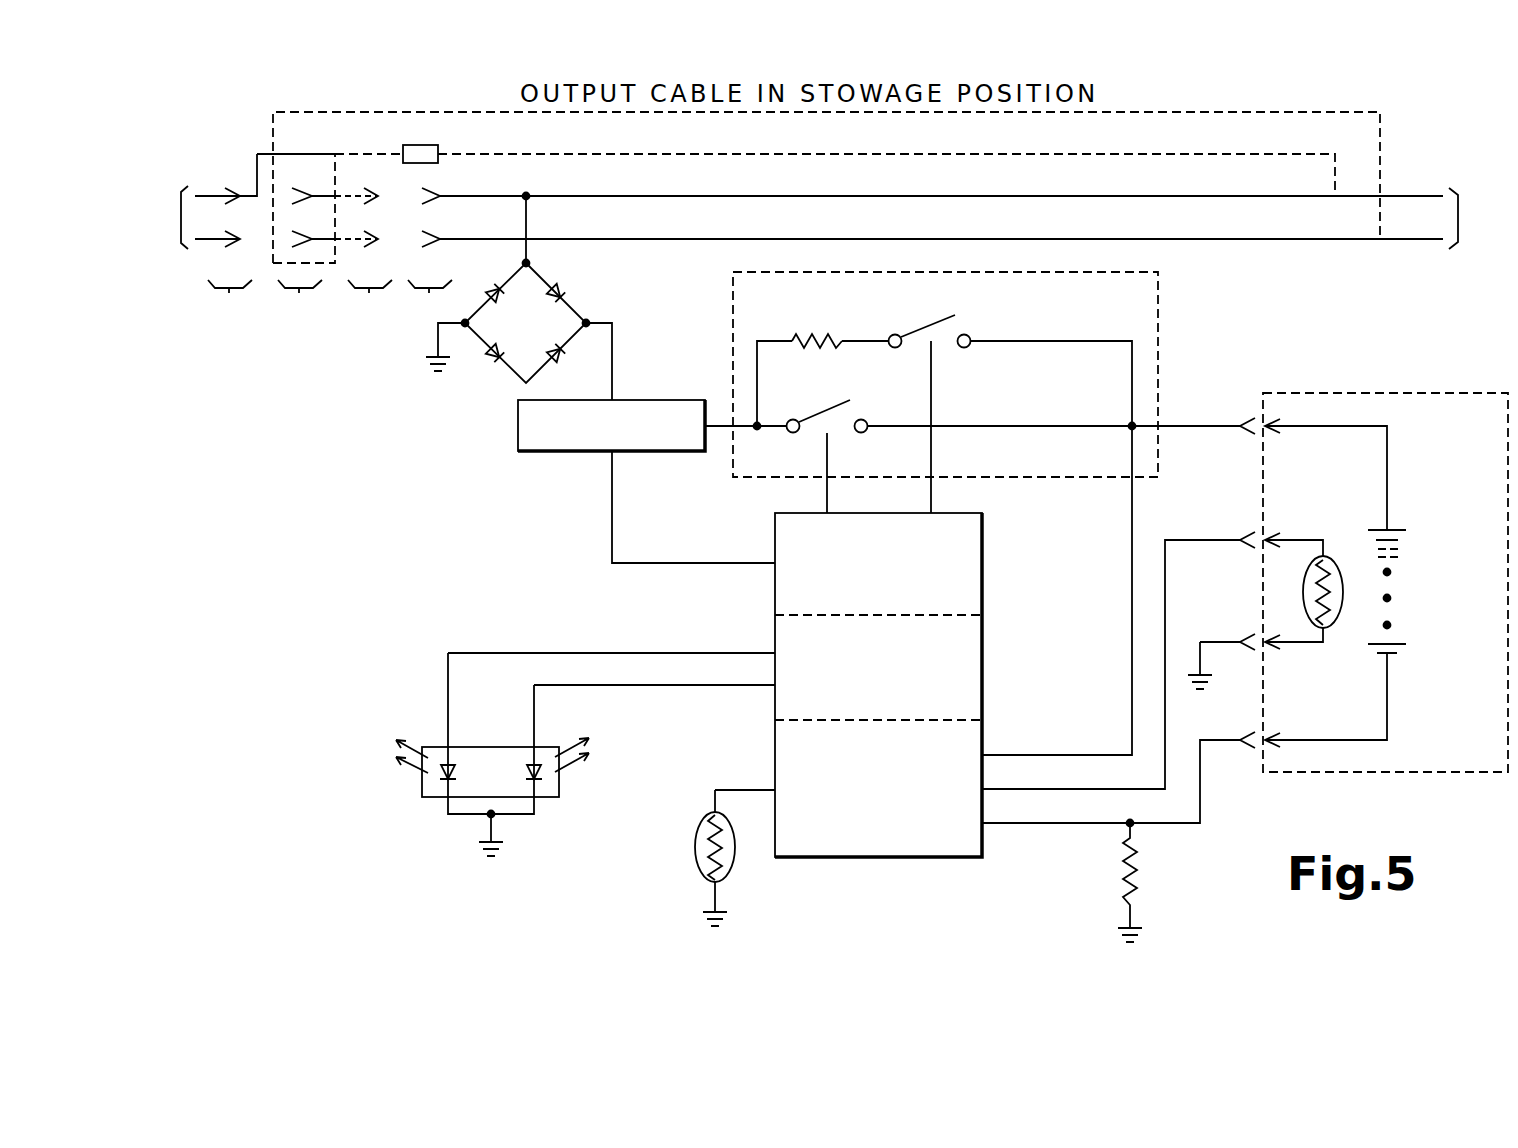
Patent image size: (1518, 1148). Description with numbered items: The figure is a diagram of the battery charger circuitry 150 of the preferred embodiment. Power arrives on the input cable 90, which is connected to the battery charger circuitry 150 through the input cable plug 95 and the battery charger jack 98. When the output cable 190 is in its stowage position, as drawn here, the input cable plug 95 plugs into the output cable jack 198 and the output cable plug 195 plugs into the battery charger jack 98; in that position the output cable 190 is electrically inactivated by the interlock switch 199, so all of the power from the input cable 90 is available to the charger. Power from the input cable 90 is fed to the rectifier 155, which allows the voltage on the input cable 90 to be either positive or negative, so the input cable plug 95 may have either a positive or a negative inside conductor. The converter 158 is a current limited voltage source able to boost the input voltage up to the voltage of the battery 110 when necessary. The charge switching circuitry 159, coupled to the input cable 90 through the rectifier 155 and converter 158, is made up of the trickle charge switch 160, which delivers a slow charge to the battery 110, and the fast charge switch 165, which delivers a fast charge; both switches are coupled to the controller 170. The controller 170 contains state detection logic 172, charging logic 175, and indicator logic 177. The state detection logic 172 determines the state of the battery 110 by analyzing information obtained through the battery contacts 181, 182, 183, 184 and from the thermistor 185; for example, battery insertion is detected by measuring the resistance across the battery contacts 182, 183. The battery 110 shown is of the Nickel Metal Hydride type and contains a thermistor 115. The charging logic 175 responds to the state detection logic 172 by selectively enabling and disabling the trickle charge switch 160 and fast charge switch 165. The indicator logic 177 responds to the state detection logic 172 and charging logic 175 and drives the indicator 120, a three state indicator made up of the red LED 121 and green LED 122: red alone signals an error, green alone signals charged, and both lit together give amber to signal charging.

The input cable 90 is at (184, 190).
The input cable plug 95 is at (229, 292).
The output cable jack 198 is at (299, 292).
The output cable plug 195 is at (369, 292).
The battery charger jack 98 is at (429, 292).
The interlock switch 199 is at (412, 145).
The output cable 190 is at (1458, 216).
The rectifier 155 is at (575, 310).
The converter 158 is at (587, 453).
The charge switching circuitry 159 is at (986, 391).
The trickle charge switch 160 is at (935, 323).
The fast charge switch 165 is at (823, 408).
The controller 170 is at (883, 705).
The charging logic 175 is at (982, 568).
The indicator logic 177 is at (982, 680).
The state detection logic 172 is at (775, 758).
The battery 110 is at (1385, 565).
The thermistor 115 is at (1340, 620).
The battery contact 181 is at (1253, 418).
The battery contact 182 is at (1253, 532).
The battery contact 183 is at (1253, 634).
The battery contact 184 is at (1253, 748).
The indicator 120 is at (466, 754).
The red LED 121 is at (452, 765).
The green LED 122 is at (538, 779).
The battery charger circuitry 150 is at (502, 894).
The thermistor 185 is at (694, 848).